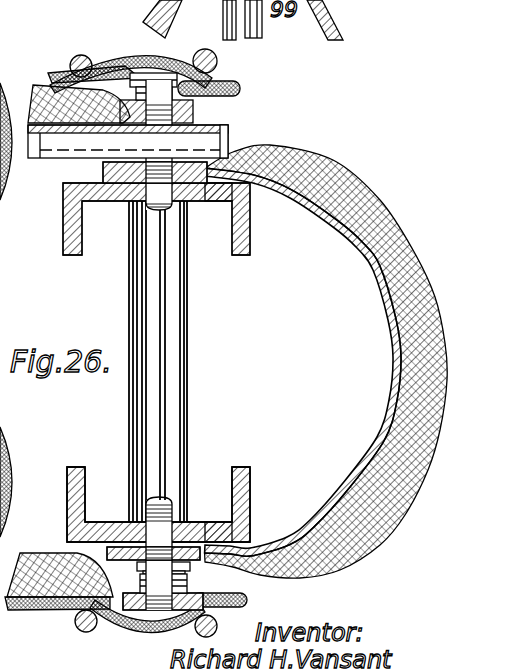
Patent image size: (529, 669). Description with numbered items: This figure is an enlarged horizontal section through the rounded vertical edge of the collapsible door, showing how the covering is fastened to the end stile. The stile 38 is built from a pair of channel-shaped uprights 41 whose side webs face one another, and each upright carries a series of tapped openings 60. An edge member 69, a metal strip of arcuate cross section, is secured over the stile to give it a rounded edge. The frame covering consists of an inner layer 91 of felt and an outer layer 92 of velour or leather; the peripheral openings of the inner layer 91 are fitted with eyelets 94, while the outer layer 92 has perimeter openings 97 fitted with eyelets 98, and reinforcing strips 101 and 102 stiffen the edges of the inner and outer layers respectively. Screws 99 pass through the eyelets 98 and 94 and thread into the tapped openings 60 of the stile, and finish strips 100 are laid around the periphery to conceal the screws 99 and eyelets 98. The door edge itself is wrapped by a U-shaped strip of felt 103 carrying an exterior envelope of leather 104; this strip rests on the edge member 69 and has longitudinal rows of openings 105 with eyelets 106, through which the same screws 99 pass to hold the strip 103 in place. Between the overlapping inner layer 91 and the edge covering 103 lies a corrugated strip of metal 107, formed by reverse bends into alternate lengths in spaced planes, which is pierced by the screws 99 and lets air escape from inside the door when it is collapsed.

The stile 38 is at (69, 263).
The upright 41 is at (65, 228).
The tapped opening 60 is at (187, 520).
The edge member 69 is at (326, 361).
The inner layer 91 is at (42, 88).
The outer layer 92 is at (53, 80).
The eyelet 94 is at (165, 110).
The opening 97 is at (197, 78).
The eyelet 98 is at (125, 72).
The screw 99 is at (152, 216).
The finish strip 100 is at (160, 73).
The reinforcing strip 101 is at (62, 160).
The reinforcing strip 102 is at (78, 70).
The U-shaped strip of felt 103 is at (397, 450).
The exterior envelope of leather 104 is at (395, 376).
The opening 105 is at (212, 201).
The eyelet 106 is at (208, 166).
The corrugated strip of metal 107 is at (224, 130).